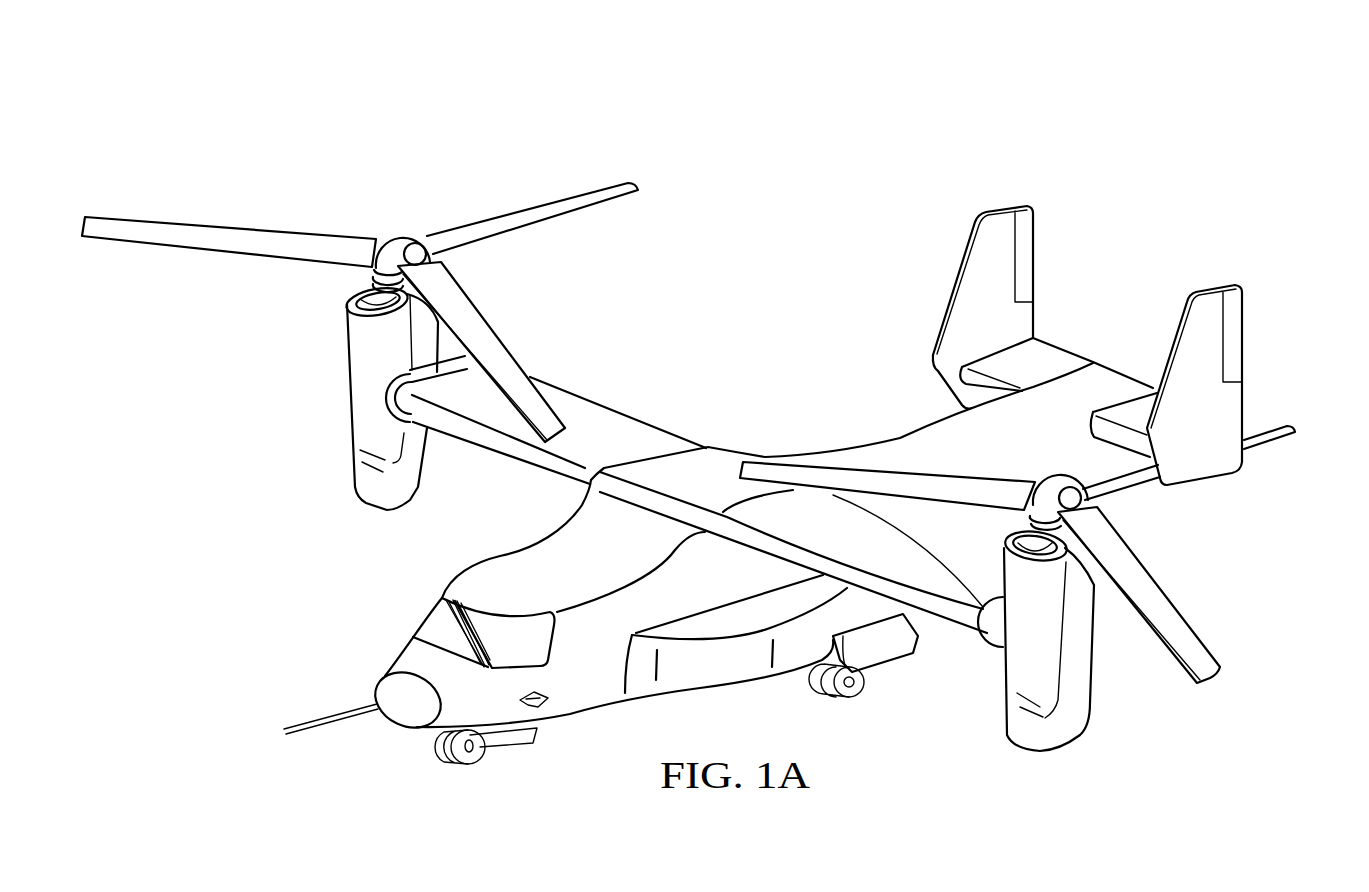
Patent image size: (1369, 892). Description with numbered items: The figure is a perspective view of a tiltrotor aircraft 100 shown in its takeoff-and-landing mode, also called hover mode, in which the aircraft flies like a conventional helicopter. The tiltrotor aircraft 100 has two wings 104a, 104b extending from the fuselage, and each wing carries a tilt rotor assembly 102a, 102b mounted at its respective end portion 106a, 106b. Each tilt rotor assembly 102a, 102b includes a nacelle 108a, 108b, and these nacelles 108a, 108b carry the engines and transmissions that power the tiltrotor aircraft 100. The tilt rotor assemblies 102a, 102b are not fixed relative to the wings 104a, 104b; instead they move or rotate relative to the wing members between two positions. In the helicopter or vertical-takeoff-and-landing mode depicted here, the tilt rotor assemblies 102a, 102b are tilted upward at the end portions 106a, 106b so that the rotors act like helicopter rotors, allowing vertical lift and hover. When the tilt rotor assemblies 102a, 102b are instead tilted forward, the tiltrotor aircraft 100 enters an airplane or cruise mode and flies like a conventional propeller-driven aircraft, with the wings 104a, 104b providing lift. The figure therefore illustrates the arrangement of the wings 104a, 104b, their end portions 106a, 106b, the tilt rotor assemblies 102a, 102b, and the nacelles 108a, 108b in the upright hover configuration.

The tiltrotor aircraft 100 is at (967, 138).
The tilt rotor assembly 102a is at (318, 308).
The tilt rotor assembly 102b is at (1219, 587).
The wing 104a is at (608, 420).
The wing 104b is at (843, 587).
The end portion 106a is at (456, 346).
The end portion 106b is at (986, 532).
The nacelle 108a is at (345, 405).
The nacelle 108b is at (1088, 692).